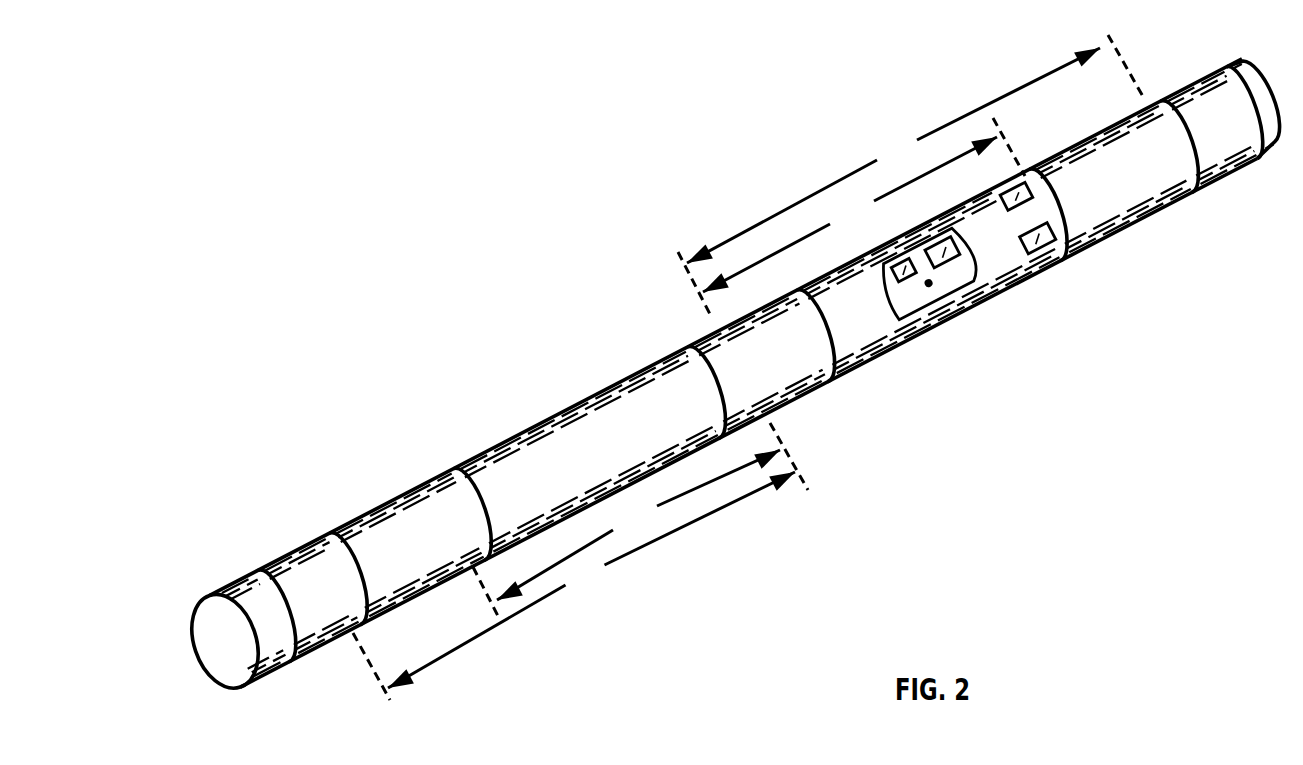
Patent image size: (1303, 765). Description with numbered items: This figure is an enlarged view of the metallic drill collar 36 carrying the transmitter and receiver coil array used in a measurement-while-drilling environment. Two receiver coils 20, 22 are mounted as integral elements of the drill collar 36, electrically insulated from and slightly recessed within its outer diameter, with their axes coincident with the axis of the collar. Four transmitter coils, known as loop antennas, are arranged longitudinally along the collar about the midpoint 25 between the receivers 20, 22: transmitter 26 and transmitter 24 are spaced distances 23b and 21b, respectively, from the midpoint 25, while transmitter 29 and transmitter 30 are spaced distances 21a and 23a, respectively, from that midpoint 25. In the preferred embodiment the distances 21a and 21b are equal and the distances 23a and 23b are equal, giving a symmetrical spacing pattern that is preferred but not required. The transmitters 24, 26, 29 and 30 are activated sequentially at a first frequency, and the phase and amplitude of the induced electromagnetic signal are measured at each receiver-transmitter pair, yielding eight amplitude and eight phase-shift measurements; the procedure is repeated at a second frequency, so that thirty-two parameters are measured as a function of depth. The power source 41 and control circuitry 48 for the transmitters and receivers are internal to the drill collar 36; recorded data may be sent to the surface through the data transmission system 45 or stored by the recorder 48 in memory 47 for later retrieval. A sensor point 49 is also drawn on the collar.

The receiver coil 20 is at (727, 380).
The longitudinal spacing distance 21a is at (872, 170).
The longitudinal spacing distance 21b is at (574, 575).
The receiver coil 22 is at (922, 315).
The longitudinal spacing distance 23a is at (1060, 64).
The longitudinal spacing distance 23b is at (760, 496).
The transmitter coil 24 is at (314, 570).
The midpoint 25 is at (660, 285).
The transmitter coil 26 is at (528, 484).
The transmitter coil 29 is at (1108, 219).
The transmitter coil 30 is at (1221, 159).
The drill collar 36 is at (951, 297).
The power source 41 is at (992, 186).
The data transmission system 45 is at (949, 333).
The memory 47 is at (965, 237).
The control circuitry 48 is at (1043, 267).
The sensor window 49 is at (876, 291).